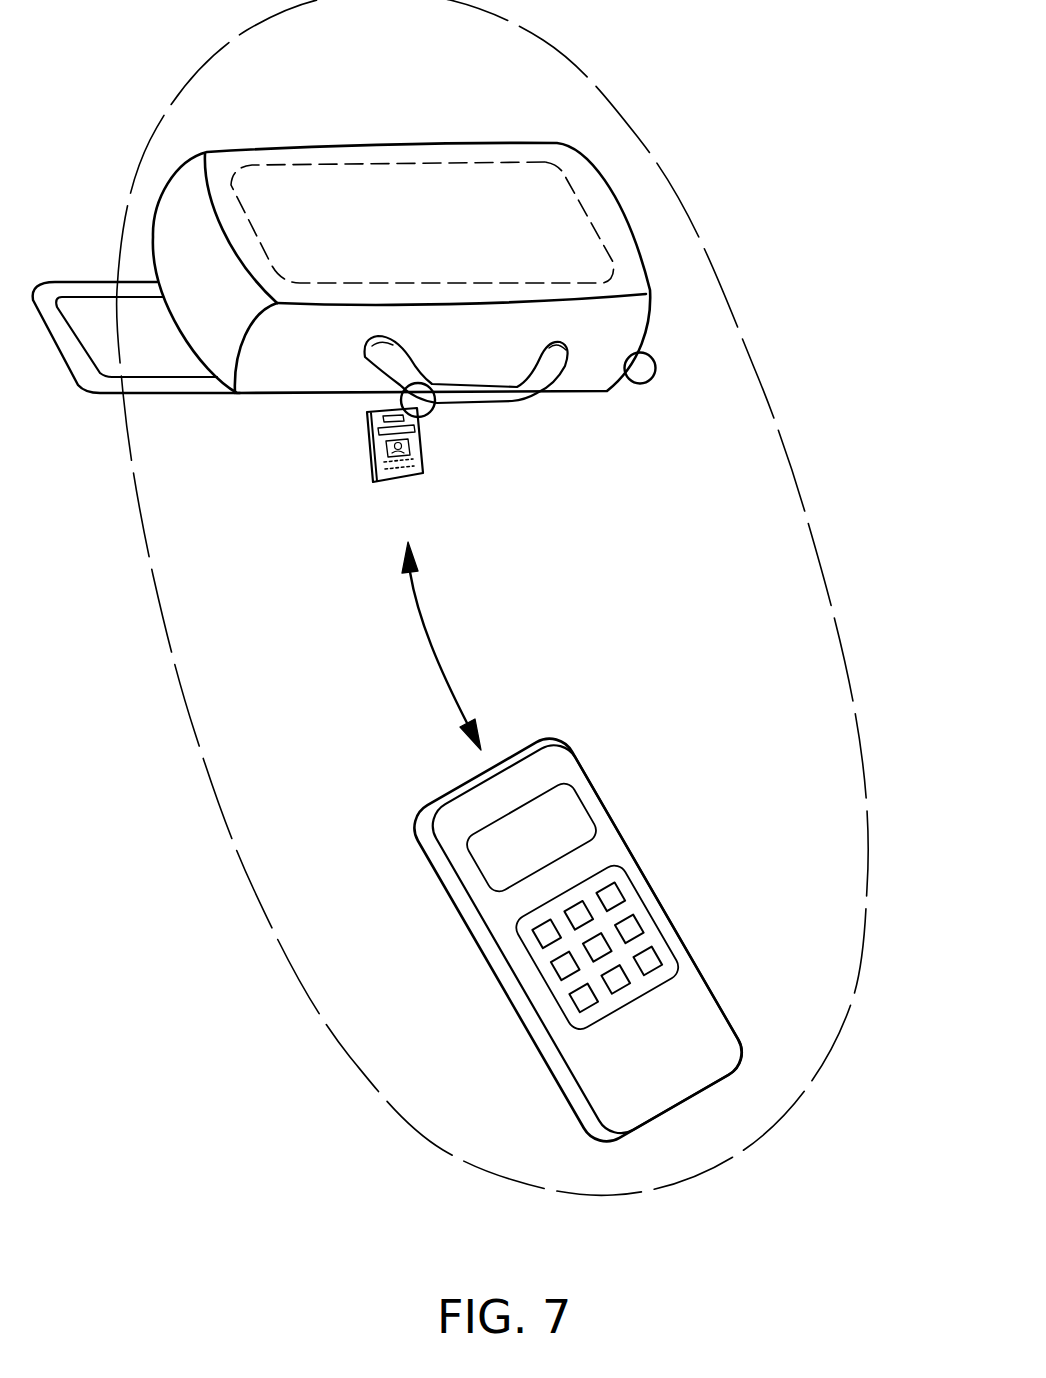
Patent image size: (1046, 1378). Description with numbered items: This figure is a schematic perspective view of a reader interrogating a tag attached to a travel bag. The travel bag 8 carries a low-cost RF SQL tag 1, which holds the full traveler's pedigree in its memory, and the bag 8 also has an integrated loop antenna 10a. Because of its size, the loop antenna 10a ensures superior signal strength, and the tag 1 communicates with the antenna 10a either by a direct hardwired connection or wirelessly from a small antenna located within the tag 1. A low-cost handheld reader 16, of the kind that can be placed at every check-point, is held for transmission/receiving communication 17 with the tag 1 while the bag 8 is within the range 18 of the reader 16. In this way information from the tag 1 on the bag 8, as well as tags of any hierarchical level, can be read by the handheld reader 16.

The RF SQL tag 1 is at (368, 445).
The travel bag 8 is at (587, 379).
The integrated loop antenna 10a is at (393, 165).
The handheld reader 16 is at (662, 890).
The transmission/receiving communication 17 is at (427, 627).
The range 18 is at (754, 361).